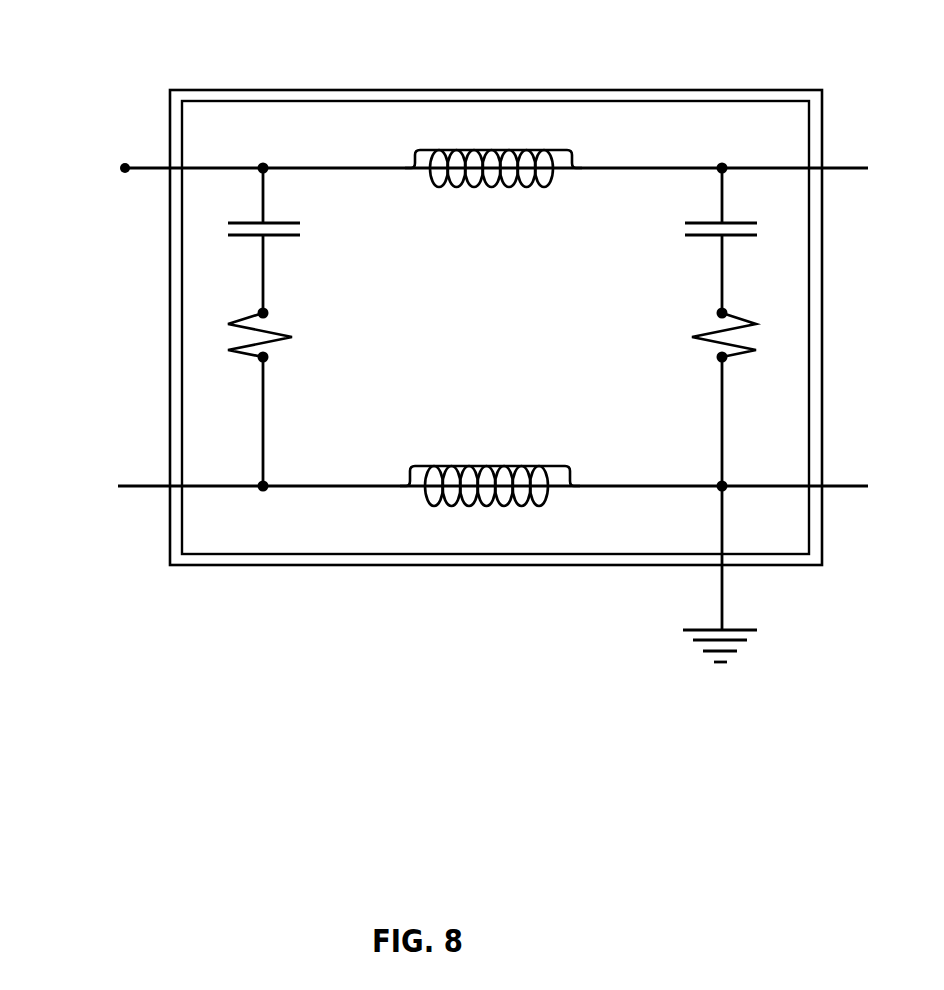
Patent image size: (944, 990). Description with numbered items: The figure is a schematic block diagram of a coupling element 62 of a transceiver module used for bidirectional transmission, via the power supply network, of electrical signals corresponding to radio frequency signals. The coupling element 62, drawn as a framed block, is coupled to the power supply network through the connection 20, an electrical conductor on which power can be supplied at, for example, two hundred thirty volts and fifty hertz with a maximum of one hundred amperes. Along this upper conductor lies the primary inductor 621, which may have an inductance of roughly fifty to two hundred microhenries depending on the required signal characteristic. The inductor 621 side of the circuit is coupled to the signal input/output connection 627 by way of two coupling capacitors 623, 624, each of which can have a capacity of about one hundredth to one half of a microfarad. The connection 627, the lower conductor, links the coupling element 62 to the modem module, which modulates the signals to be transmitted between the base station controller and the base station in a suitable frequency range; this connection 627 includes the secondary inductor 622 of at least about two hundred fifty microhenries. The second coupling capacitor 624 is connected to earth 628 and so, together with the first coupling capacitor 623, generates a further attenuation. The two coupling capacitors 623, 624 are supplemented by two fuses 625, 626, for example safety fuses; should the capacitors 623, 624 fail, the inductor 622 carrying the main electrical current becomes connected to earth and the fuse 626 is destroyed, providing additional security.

The connection 20 is at (155, 167).
The coupling element 62 is at (661, 97).
The primary inductor 621 is at (455, 188).
The secondary inductor 622 is at (479, 467).
The first coupling capacitor 623 is at (292, 230).
The second coupling capacitor 624 is at (692, 233).
The fuse 625 is at (280, 328).
The fuse 626 is at (708, 333).
The signal input/output connection 627 is at (135, 486).
The earth 628 is at (728, 630).